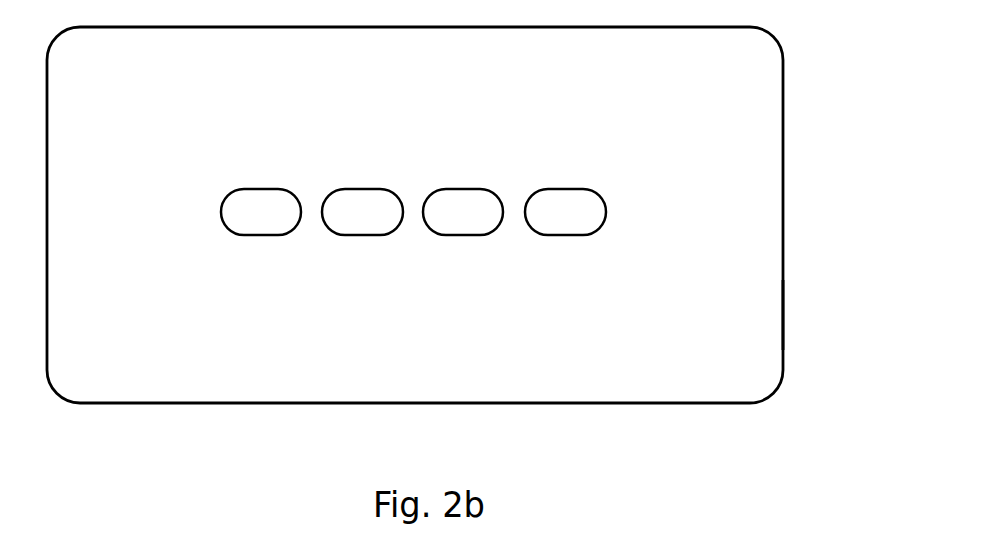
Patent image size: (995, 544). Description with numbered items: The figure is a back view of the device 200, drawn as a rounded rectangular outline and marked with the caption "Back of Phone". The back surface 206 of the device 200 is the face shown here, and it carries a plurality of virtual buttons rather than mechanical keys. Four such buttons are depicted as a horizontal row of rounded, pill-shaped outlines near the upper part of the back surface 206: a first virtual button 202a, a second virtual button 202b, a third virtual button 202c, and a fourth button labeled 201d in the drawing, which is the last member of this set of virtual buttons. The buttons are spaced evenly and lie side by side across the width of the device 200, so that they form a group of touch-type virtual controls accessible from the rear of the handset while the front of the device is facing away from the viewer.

The device 200 is at (753, 200).
The back surface 206 is at (755, 298).
The virtual button 202a is at (258, 186).
The virtual button 202b is at (357, 187).
The virtual button 202c is at (450, 187).
The button 201d is at (548, 187).